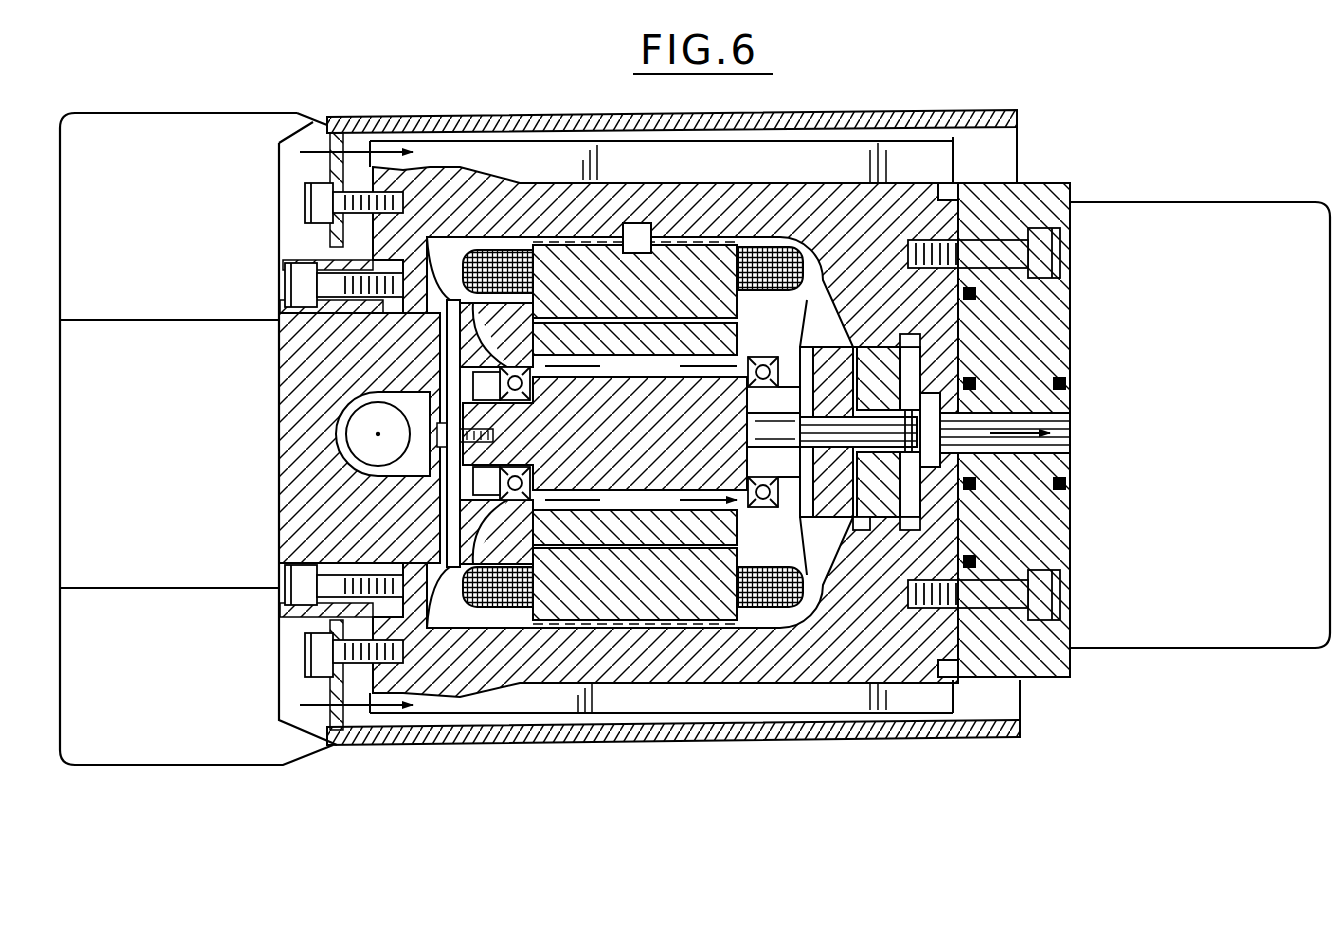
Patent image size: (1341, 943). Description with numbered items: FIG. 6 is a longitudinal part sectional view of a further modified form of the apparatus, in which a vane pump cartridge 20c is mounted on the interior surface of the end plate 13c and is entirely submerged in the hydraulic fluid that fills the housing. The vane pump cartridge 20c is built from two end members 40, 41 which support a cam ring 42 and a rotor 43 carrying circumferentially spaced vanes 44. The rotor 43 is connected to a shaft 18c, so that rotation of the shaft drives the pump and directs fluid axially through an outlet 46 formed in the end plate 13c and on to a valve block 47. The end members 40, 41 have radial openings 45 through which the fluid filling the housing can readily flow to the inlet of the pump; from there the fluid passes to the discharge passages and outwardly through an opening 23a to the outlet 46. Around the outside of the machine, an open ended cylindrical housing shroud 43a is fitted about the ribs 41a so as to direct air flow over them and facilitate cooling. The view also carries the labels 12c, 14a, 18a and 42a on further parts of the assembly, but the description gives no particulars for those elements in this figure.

The motor frame end housing 12c is at (293, 485).
The end plate 13c is at (1050, 197).
The stator 14a is at (683, 267).
The shaft 18c is at (672, 447).
The shaft end portion 18a is at (832, 424).
The vane pump cartridge 20c is at (923, 338).
The opening 23a is at (947, 443).
The end member 40 is at (635, 460).
The end member 41 is at (897, 530).
The ribs 41a is at (938, 163).
The cam ring 42 is at (920, 547).
The cover 42a is at (235, 135).
The rotor 43 is at (933, 497).
The housing shroud 43a is at (928, 117).
The vanes 44 is at (877, 387).
The radial openings 45 is at (863, 530).
The outlet 46 is at (1067, 430).
The valve block 47 is at (1220, 288).